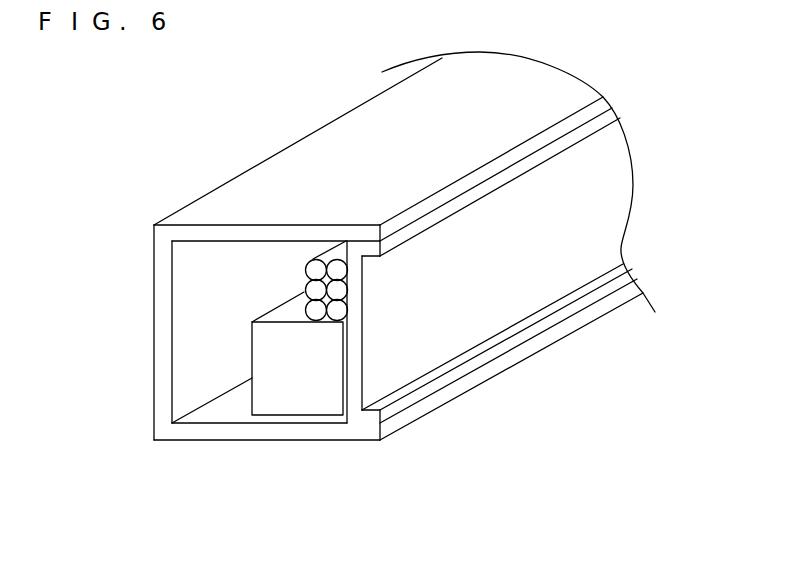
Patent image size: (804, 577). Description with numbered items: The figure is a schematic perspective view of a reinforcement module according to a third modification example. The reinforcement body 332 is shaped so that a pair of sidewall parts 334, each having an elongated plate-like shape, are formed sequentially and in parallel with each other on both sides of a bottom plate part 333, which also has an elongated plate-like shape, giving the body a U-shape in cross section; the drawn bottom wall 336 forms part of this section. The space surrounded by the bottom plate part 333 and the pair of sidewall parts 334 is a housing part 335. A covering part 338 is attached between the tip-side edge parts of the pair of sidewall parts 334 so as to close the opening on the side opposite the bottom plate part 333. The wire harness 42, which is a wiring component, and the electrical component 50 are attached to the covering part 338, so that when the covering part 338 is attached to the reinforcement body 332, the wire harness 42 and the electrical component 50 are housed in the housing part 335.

The wire harness 42 is at (305, 264).
The electrical component 50 is at (313, 407).
The reinforcement body 332 is at (296, 148).
The bottom plate part 333 is at (155, 323).
The sidewall part 334 is at (336, 232).
The housing part 335 is at (208, 415).
The bottom wall 336 is at (248, 434).
The covering part 338 is at (412, 353).